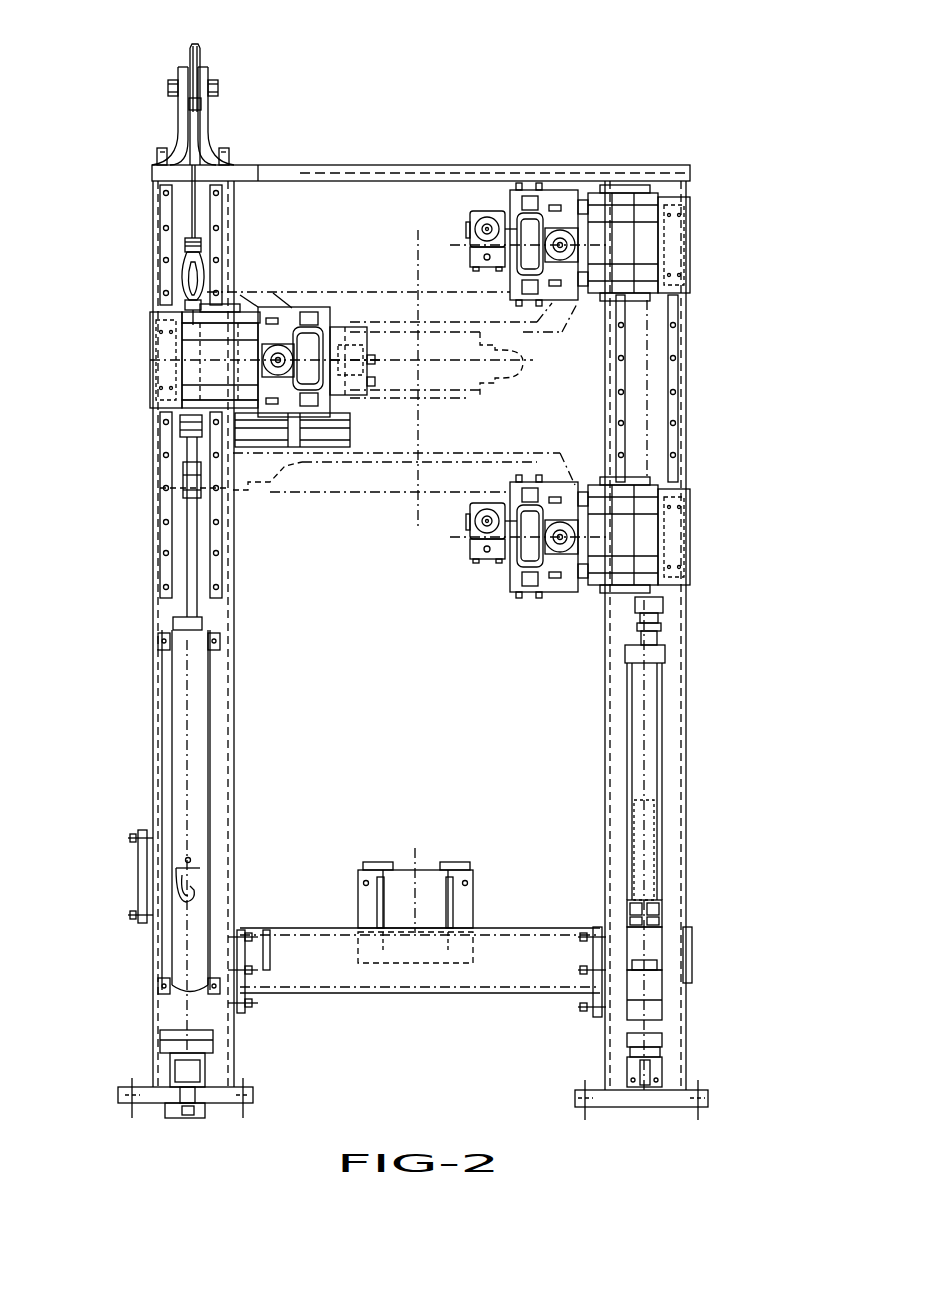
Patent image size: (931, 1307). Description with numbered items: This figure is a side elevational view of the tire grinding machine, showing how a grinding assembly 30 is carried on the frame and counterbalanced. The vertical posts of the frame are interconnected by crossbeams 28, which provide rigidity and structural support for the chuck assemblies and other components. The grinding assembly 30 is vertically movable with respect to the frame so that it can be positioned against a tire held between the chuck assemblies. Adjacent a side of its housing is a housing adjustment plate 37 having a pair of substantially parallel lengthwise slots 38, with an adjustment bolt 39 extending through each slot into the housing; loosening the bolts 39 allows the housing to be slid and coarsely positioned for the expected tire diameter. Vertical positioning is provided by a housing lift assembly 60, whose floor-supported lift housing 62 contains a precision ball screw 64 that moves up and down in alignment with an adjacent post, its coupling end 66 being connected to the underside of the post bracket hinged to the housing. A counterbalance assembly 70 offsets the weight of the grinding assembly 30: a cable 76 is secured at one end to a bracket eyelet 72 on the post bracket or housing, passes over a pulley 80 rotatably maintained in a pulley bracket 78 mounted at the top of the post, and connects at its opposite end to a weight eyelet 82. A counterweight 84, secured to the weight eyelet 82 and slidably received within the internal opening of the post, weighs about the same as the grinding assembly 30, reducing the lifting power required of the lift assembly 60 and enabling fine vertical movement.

The crossbeam 28 is at (308, 928).
The grinding assembly 30 is at (471, 585).
The housing adjustment plate 37 is at (585, 560).
The lengthwise slot 38 is at (535, 665).
The adjustment bolt 39 is at (575, 510).
The housing lift assembly 60 is at (203, 766).
The lift housing 62 is at (180, 718).
The precision ball screw 64 is at (180, 622).
The coupling end 66 is at (178, 417).
The counterbalance assembly 70 is at (251, 126).
The bracket eyelet 72 is at (185, 287).
The cable 76 is at (190, 205).
The pulley bracket 78 is at (180, 130).
The pulley 80 is at (188, 57).
The weight eyelet 82 is at (175, 490).
The counterweight 84 is at (205, 546).